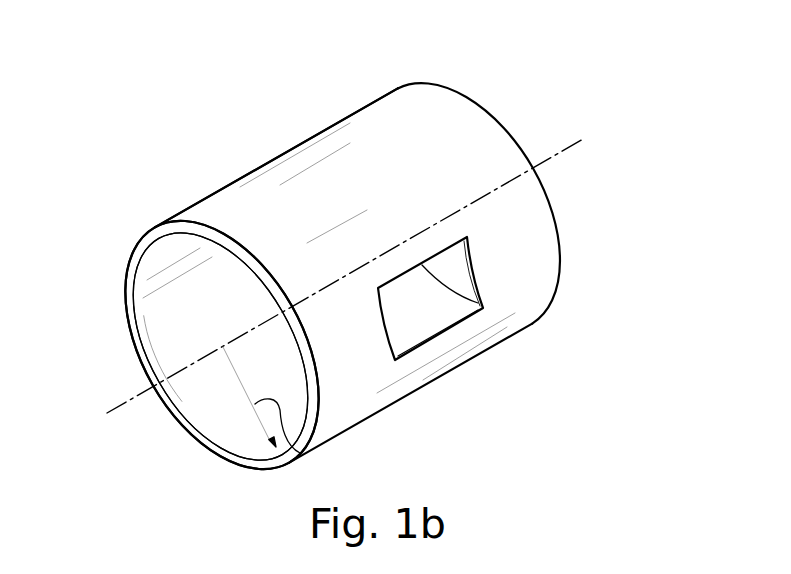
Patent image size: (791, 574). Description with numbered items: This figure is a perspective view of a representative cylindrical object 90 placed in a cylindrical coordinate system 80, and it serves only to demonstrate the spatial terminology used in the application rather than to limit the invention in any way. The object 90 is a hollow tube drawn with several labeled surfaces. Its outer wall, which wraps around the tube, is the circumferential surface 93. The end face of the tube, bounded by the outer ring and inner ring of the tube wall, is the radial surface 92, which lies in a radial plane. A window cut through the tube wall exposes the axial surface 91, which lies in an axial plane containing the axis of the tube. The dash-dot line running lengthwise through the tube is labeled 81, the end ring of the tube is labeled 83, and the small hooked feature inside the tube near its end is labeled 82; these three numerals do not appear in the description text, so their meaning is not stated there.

The cylindrical coordinate system 80 is at (495, 97).
The cylindrical object 90 is at (373, 90).
The circumferential surface 93 is at (322, 178).
The end ring 83 is at (135, 256).
The longitudinal axis 81 is at (117, 410).
The radial surface 92 is at (200, 444).
The retaining hook 82 is at (300, 453).
The axial surface 91 is at (455, 311).